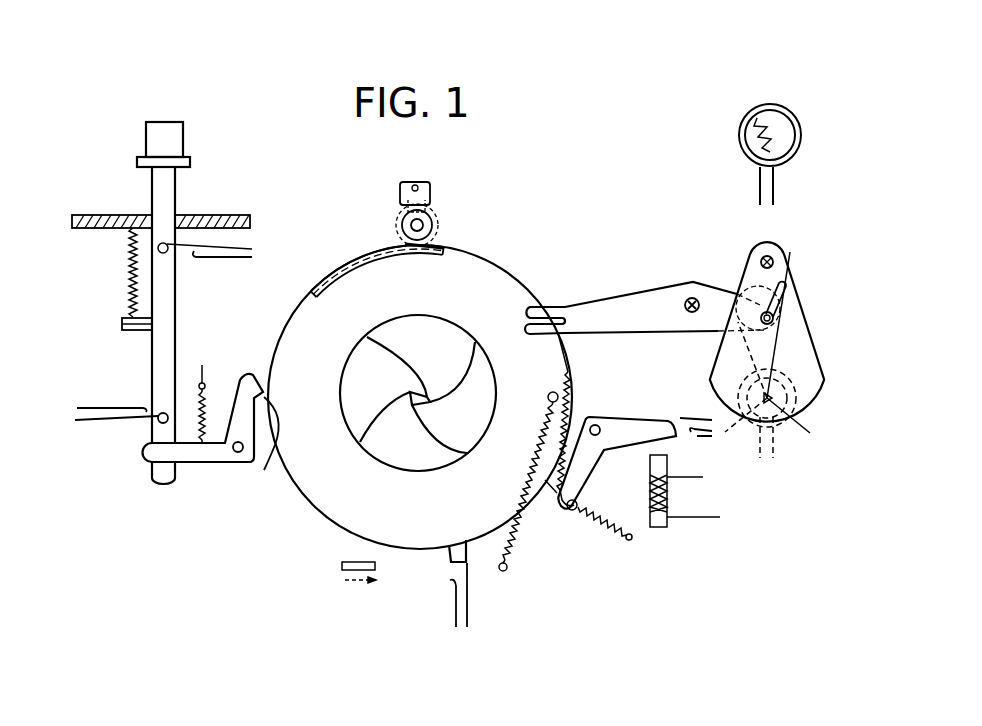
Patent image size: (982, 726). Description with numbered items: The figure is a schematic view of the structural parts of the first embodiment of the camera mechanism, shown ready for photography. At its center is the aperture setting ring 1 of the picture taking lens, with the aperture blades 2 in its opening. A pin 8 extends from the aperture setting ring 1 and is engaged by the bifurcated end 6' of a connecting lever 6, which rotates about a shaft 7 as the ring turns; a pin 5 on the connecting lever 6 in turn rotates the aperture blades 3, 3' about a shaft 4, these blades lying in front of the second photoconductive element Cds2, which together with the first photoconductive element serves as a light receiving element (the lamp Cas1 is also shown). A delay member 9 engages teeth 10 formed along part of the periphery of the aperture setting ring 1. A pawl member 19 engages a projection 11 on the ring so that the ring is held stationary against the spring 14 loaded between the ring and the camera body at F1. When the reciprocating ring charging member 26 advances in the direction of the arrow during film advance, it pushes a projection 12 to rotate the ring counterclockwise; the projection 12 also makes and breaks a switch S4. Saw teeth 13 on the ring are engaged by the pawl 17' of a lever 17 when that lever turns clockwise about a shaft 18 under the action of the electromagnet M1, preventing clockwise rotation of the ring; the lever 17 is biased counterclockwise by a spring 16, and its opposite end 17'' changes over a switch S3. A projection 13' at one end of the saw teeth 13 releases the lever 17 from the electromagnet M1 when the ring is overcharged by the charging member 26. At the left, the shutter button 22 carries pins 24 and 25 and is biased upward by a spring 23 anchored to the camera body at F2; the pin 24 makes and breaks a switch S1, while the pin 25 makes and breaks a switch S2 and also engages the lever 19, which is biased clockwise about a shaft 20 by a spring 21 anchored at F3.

The aperture setting ring 1 is at (290, 316).
The aperture blades 2 is at (408, 328).
The aperture blade 3 is at (781, 337).
The aperture blade 3' is at (689, 362).
The shaft 4 is at (773, 262).
The pin 5 is at (774, 318).
The connecting lever 6 is at (666, 287).
The bifurcated end 6' is at (545, 296).
The shaft 7 is at (690, 298).
The pin 8 is at (530, 321).
The delay member 9 is at (397, 222).
The teeth 10 is at (336, 266).
The projection 11 is at (270, 448).
The projection 12 is at (451, 555).
The saw teeth 13 is at (566, 521).
The projection 13' is at (546, 442).
The spring 14 is at (525, 495).
The spring 16 is at (578, 506).
The lever 17 is at (617, 463).
The pawl 17' is at (597, 539).
The opposite end 17'' is at (707, 457).
The shaft 18 is at (594, 424).
The pawl member 19 is at (218, 457).
The shaft 20 is at (238, 454).
The spring 21 is at (205, 418).
The shutter button 22 is at (167, 137).
The spring 23 is at (130, 299).
The pin 24 is at (157, 248).
The pin 25 is at (158, 412).
The charging member 26 is at (341, 566).
The camera body anchoring point F1 is at (505, 571).
The camera body anchoring point F2 is at (97, 215).
The camera body anchoring point F3 is at (206, 362).
The switch S1 is at (222, 272).
The switch S2 is at (116, 429).
The switch S3 is at (687, 412).
The switch S4 is at (476, 595).
The electromagnet M1 is at (657, 528).
The lamp Cas1 is at (782, 138).
The second photoconductive element Cds2 is at (776, 396).